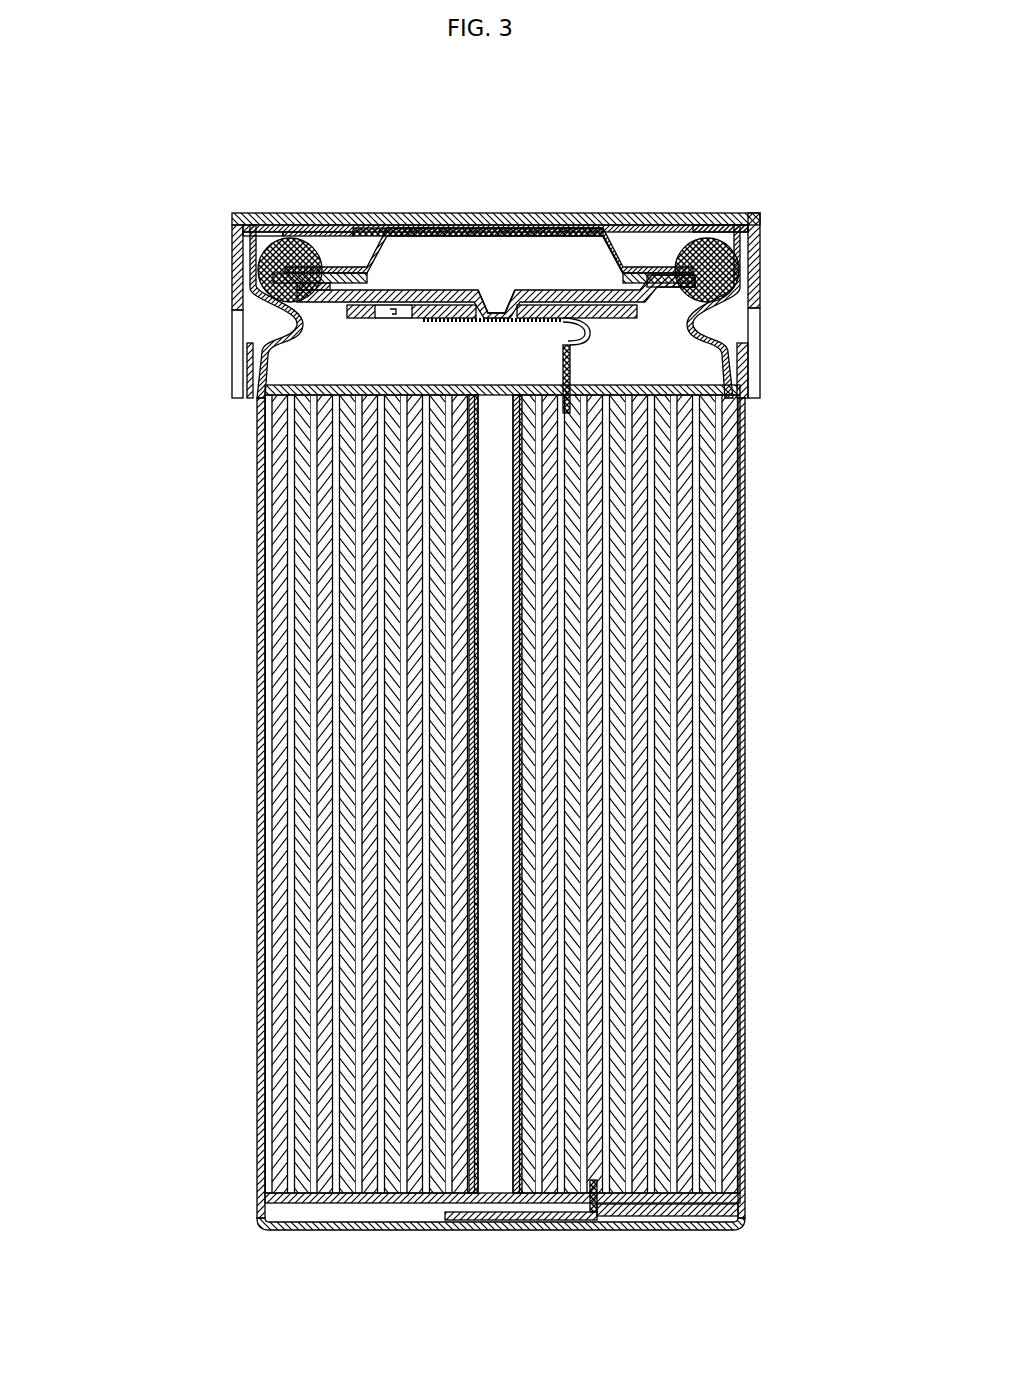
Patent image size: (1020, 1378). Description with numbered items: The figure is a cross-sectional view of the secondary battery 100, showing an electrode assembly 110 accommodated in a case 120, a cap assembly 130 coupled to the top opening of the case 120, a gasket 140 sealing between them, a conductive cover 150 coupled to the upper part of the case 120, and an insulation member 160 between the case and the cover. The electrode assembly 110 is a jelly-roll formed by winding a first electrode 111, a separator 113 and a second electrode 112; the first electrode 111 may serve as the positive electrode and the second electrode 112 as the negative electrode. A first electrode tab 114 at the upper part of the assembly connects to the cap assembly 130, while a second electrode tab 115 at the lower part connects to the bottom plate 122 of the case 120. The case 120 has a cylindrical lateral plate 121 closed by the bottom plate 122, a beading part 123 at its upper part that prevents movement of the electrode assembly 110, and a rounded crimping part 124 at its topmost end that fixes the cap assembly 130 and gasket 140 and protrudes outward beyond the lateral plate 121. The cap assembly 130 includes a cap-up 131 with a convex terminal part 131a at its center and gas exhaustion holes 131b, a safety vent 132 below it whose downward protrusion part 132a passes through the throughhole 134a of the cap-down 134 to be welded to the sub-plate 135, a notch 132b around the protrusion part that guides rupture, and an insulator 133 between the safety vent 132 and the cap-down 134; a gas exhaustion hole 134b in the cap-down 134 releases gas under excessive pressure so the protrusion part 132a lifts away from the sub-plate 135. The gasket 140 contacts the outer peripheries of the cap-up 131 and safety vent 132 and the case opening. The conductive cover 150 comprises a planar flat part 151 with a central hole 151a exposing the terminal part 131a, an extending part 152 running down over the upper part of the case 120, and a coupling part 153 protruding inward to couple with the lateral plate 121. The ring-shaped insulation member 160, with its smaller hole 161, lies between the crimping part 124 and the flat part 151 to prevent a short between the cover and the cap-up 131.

The secondary battery 100 is at (207, 168).
The electrode assembly 110 is at (818, 432).
The first electrode 111 is at (705, 510).
The second electrode 112 is at (727, 435).
The separator 113 is at (715, 475).
The first electrode tab 114 is at (600, 365).
The second electrode tab 115 is at (548, 1222).
The case 120 is at (750, 627).
The lateral plate 121 is at (745, 1005).
The bottom plate 122 is at (655, 1233).
The beading part 123 is at (705, 325).
The crimping part 124 is at (737, 240).
The cap assembly 130 is at (683, 138).
The cap-up 131 is at (525, 230).
The terminal part 131a is at (490, 232).
The gas exhaustion holes 131b is at (627, 297).
The safety vent 132 is at (597, 291).
The protrusion part 132a is at (480, 320).
The notch 132b is at (583, 291).
The insulator 133 is at (664, 273).
The cap-down 134 is at (453, 302).
The throughhole 134a is at (520, 322).
The gas exhaustion hole 134b is at (405, 306).
The sub-plate 135 is at (387, 283).
The gasket 140 is at (735, 272).
The conductive cover 150 is at (133, 205).
The flat part 151 is at (262, 215).
The central hole 151a is at (336, 213).
The extending part 152 is at (238, 268).
The coupling part 153 is at (240, 365).
The insulation member 160 is at (730, 208).
The hole 161 is at (357, 226).